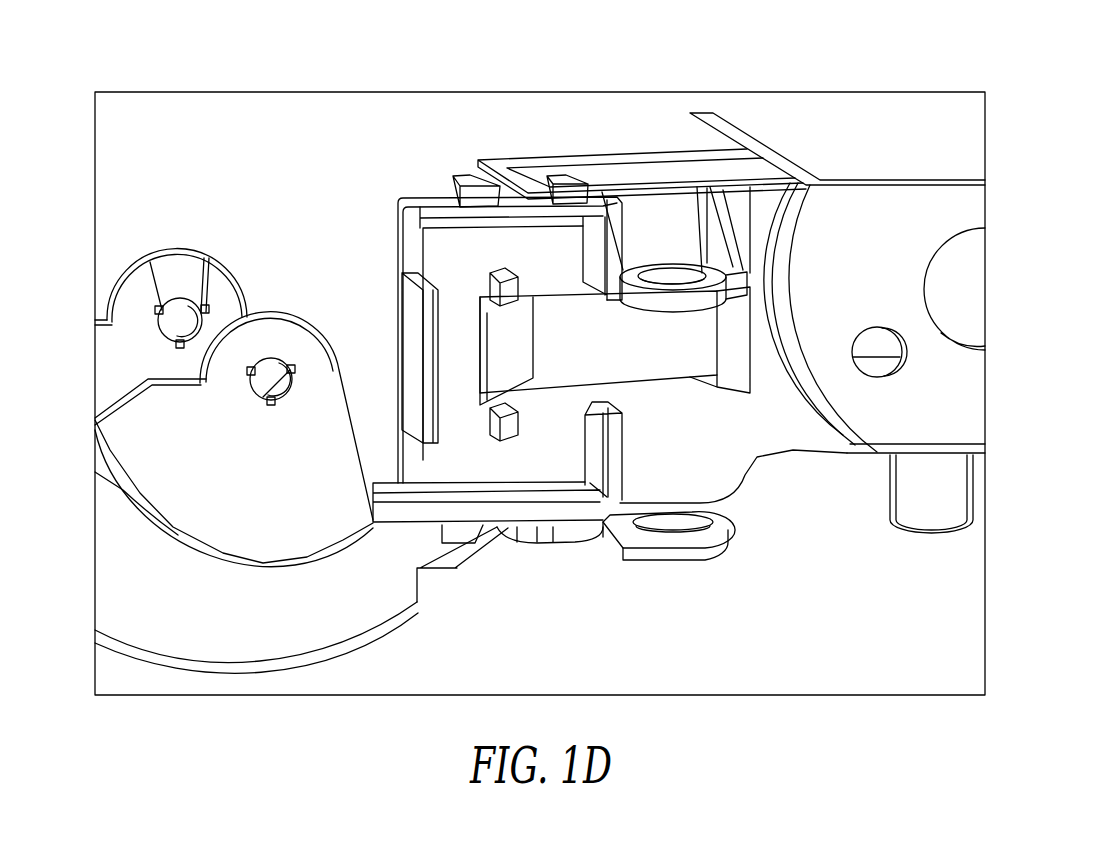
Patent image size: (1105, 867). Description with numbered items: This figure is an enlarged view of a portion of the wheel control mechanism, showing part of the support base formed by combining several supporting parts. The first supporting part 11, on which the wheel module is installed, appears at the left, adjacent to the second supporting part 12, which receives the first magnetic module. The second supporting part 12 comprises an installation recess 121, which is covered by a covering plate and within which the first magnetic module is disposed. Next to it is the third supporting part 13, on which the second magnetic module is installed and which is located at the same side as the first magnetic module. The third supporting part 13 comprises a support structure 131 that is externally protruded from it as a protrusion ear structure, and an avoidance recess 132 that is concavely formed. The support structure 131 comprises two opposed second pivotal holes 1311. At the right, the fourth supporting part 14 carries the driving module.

The first supporting part 11 is at (307, 513).
The second supporting part 12 is at (435, 200).
The installation recess 121 is at (483, 470).
The third supporting part 13 is at (497, 157).
The support structure 131 is at (693, 270).
The second pivotal hole 1311 is at (663, 265).
The avoidance recess 132 is at (680, 353).
The fourth supporting part 14 is at (965, 203).